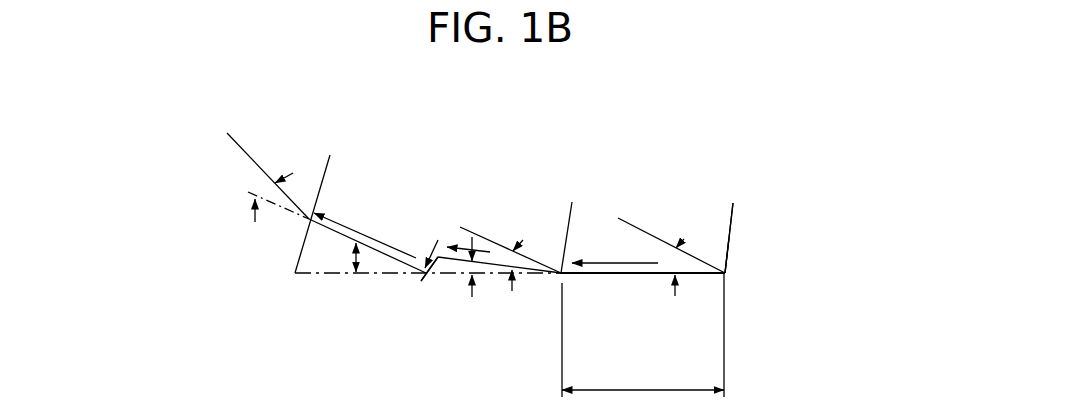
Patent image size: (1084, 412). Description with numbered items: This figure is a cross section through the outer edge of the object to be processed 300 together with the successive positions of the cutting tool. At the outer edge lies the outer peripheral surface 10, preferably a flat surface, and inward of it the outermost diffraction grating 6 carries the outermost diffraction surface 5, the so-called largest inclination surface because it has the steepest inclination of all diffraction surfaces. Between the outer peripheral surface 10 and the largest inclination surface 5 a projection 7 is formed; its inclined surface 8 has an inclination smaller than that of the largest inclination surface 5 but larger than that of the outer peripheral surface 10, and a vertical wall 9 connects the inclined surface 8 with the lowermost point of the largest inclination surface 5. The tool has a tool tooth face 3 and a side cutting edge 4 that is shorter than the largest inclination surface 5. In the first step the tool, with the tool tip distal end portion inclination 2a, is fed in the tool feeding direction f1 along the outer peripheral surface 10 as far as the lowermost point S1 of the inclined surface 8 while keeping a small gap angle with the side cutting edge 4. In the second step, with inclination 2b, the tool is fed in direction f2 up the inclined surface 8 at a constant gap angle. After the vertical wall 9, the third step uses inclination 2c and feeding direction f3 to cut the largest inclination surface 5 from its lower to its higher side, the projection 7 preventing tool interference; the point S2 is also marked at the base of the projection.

The tool tip distal end portion inclination in the third step 2c is at (230, 143).
The outermost diffraction grating 6 is at (312, 247).
The outermost diffraction surface 5 is at (382, 250).
The tool feeding direction f3 is at (338, 216).
The vertical wall 9 is at (433, 243).
The projection 7 is at (441, 272).
The inclined surface 8 is at (479, 264).
The tool feeding direction f2 is at (481, 245).
The tool tip distal end portion inclination in the second step 2b is at (572, 212).
The lowermost point of the inclined surface S1 is at (557, 274).
The object to be processed 300 is at (712, 297).
The tool feeding direction f1 is at (603, 266).
The side cutting edge 4 is at (673, 253).
The tool tooth face 3 is at (703, 230).
The tool tip distal end portion inclination in the first step 2a is at (733, 215).
The second reflection point S2 is at (426, 275).
The outer peripheral surface 10 is at (643, 335).